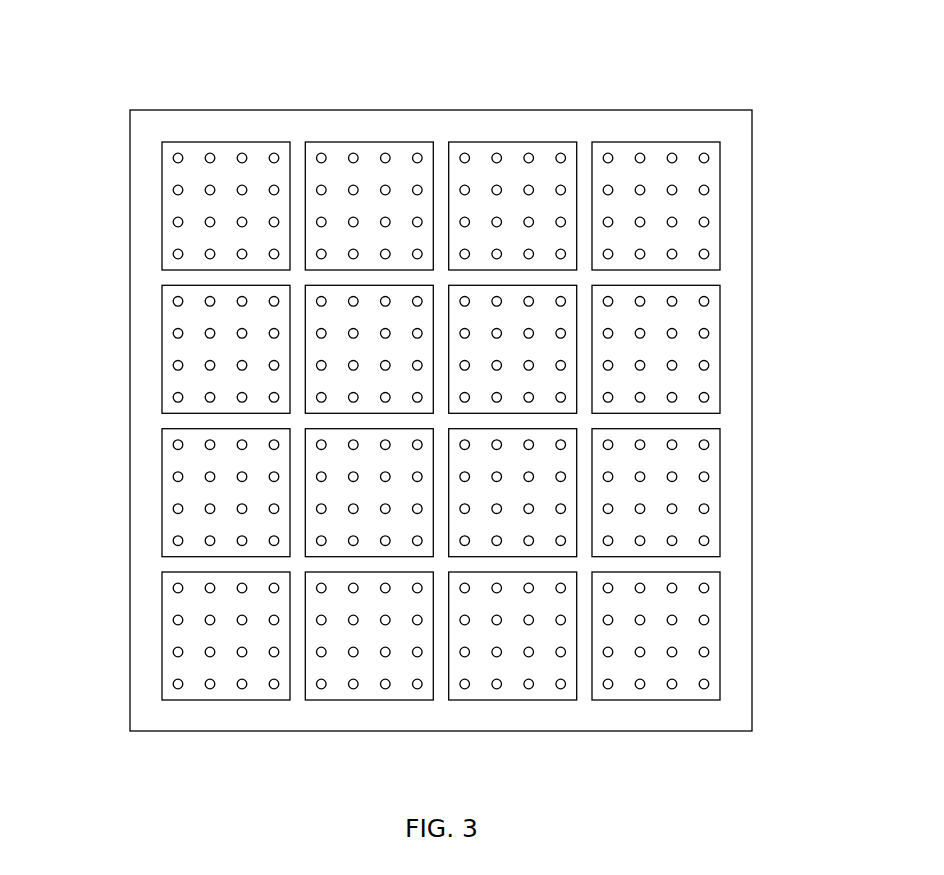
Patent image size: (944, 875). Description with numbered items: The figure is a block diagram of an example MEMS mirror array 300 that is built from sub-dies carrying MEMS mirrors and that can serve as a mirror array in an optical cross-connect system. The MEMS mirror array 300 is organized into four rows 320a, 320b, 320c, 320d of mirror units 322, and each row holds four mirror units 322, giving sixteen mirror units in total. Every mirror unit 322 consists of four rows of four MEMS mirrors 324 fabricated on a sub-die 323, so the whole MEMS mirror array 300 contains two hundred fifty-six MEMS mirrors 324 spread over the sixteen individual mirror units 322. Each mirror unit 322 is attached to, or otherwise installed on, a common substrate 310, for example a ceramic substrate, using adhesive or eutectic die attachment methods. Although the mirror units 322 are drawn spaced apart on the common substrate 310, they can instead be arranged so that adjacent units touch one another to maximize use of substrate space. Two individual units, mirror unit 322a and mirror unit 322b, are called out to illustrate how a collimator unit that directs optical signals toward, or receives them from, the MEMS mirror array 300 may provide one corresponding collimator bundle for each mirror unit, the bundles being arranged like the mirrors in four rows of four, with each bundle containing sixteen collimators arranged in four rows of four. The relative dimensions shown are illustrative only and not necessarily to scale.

The MEMS mirror array 300 is at (110, 59).
The common substrate 310 is at (735, 121).
The first row of mirror units 320a is at (143, 183).
The second row of mirror units 320b is at (142, 327).
The third row of mirror units 320c is at (142, 487).
The fourth row of mirror units 320d is at (142, 630).
The mirror unit 322 is at (203, 141).
The mirror unit 322a is at (582, 286).
The mirror unit 322b is at (725, 424).
The sub-die 323 is at (225, 144).
The MEMS mirror 324 is at (249, 151).